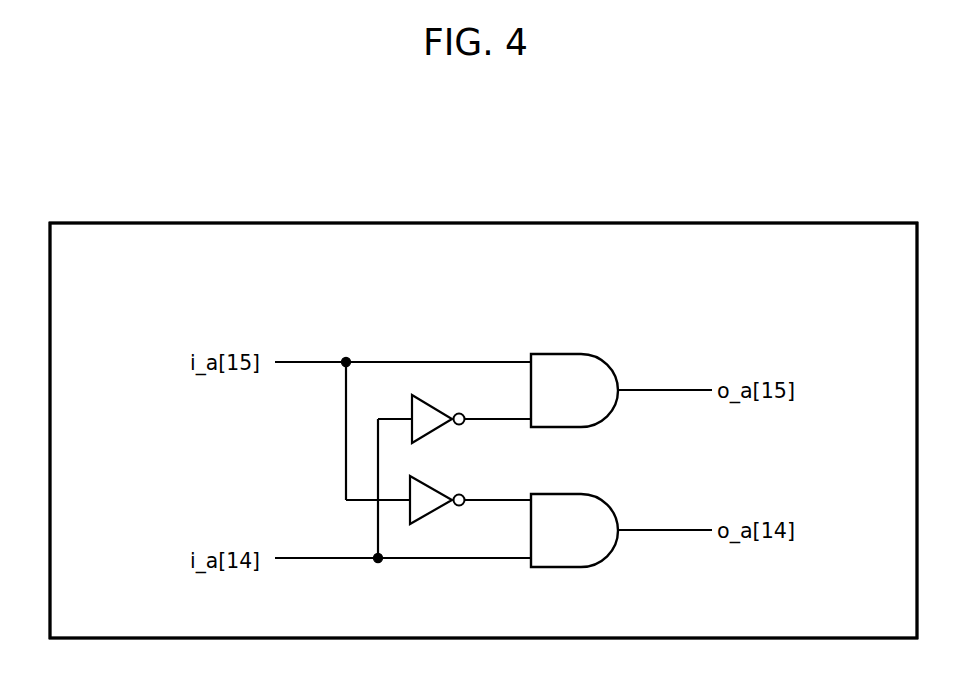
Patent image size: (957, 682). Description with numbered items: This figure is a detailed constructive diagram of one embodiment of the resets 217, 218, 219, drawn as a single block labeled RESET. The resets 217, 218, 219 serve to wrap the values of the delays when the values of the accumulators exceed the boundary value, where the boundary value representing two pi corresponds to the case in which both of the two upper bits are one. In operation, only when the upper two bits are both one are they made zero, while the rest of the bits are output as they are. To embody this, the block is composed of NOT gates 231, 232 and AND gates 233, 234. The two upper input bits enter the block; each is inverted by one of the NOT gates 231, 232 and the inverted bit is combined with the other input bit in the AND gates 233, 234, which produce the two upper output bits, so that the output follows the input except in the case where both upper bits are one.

The reset 217 is at (705, 223).
The reset 218 is at (483, 412).
The reset 219 is at (483, 412).
The NOT gate 231 is at (437, 403).
The NOT gate 232 is at (437, 485).
The AND gate 233 is at (598, 352).
The AND gate 234 is at (598, 492).